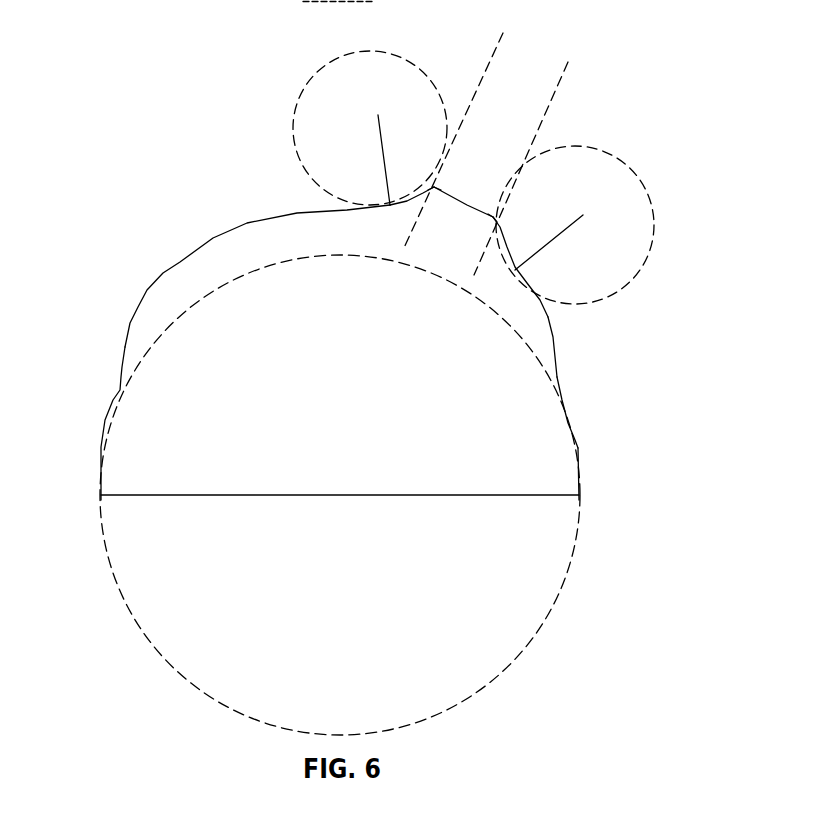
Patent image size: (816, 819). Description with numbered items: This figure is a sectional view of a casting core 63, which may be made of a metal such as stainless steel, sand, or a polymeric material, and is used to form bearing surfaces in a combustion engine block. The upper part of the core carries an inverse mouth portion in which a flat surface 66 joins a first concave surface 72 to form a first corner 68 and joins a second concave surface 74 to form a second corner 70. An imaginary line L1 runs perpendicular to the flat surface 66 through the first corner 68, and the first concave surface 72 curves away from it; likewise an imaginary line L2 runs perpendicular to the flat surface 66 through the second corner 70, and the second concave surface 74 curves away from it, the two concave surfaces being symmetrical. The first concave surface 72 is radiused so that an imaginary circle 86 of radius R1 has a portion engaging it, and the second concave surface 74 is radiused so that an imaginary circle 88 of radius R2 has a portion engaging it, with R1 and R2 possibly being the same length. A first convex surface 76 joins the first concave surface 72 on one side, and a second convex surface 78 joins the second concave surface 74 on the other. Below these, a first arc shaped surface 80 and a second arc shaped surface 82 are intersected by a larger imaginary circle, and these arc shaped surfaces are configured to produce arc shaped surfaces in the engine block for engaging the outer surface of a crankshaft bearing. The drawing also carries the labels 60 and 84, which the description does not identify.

The profile body 60 is at (552, 382).
The casting core 63 is at (373, 429).
The flat surface 66 is at (477, 207).
The first corner 68 is at (436, 185).
The second corner 70 is at (492, 222).
The first concave surface 72 is at (397, 202).
The second concave surface 74 is at (527, 277).
The first convex surface 76 is at (180, 262).
The second convex surface 78 is at (555, 333).
The first arc shaped surface 80 is at (102, 450).
The second arc shaped surface 82 is at (577, 443).
The flat base 84 is at (455, 496).
The imaginary circle 86 is at (322, 70).
The imaginary circle 88 is at (641, 180).
The radius R1 is at (380, 130).
The radius R2 is at (572, 220).
The imaginary line L1 is at (488, 65).
The imaginary line L2 is at (553, 92).